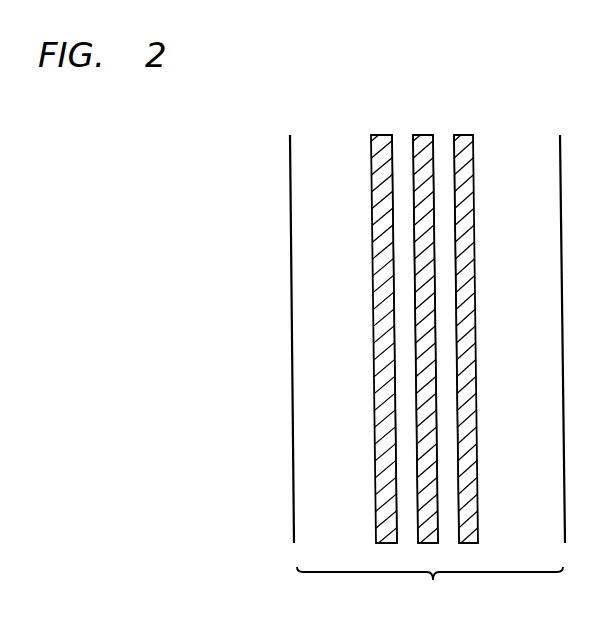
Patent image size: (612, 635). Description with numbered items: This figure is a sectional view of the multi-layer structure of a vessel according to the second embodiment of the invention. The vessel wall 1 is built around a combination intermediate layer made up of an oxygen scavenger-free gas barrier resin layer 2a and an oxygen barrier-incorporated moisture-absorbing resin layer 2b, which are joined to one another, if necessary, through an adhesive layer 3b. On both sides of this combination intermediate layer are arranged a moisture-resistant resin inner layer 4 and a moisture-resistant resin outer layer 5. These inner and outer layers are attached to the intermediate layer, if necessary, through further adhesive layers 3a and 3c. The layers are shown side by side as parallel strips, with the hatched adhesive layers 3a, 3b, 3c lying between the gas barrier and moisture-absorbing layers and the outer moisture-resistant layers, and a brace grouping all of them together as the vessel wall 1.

The vessel wall 1 is at (430, 594).
The oxygen scavenger-free gas barrier resin layer 2a is at (405, 140).
The oxygen barrier-incorporated moisture-absorbing resin layer 2b is at (443, 140).
The adhesive layer 3a is at (383, 138).
The adhesive layer 3b is at (423, 138).
The adhesive layer 3c is at (467, 140).
The moisture-resistant resin inner layer 4 is at (335, 143).
The moisture-resistant resin outer layer 5 is at (532, 143).